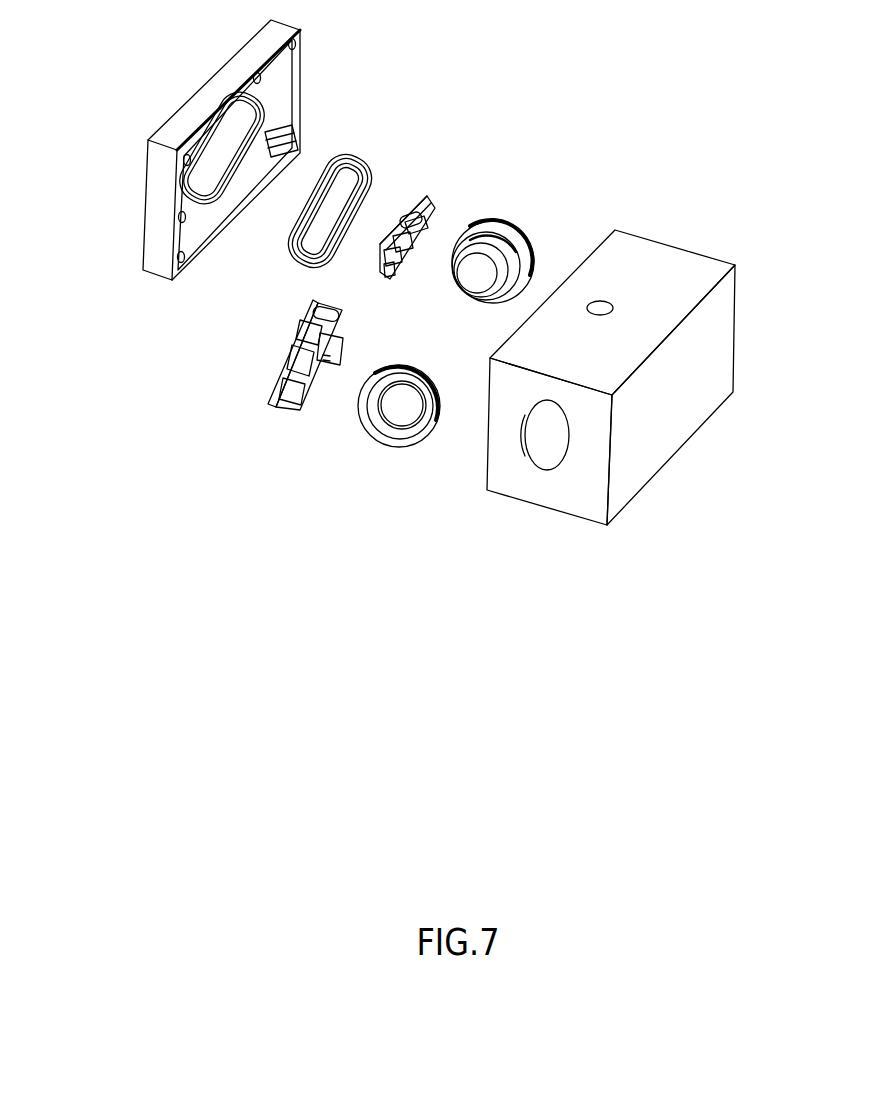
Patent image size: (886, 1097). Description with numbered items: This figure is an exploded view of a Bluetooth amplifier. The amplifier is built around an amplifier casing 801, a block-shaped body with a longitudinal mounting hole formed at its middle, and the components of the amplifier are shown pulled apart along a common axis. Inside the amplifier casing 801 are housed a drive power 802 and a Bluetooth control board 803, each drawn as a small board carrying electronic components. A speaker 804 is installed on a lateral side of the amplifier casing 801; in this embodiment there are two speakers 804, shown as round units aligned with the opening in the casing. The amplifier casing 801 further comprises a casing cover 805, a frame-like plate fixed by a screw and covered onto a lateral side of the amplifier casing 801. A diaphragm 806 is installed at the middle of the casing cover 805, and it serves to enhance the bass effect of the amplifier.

The amplifier casing 801 is at (677, 260).
The drive power 802 is at (293, 362).
The Bluetooth control board 803 is at (427, 197).
The speaker 804 is at (518, 237).
The casing cover 805 is at (200, 108).
The diaphragm 806 is at (365, 173).